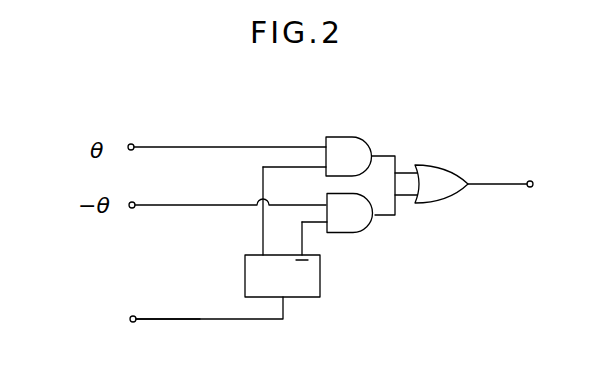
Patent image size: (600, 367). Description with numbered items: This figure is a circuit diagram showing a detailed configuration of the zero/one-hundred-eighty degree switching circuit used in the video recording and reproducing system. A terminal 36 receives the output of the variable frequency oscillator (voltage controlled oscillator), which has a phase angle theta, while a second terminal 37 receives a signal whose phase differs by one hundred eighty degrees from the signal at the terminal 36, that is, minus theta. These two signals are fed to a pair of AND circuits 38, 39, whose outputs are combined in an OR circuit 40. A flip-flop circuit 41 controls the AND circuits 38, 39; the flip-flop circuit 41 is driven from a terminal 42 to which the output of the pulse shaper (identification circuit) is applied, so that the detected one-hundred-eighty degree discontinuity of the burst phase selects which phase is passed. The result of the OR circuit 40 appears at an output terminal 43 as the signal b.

The terminal 36 is at (132, 143).
The terminal 37 is at (133, 201).
The AND circuit 38 is at (352, 137).
The AND circuit 39 is at (370, 223).
The OR circuit 40 is at (468, 158).
The flip-flop circuit 41 is at (322, 278).
The terminal 42 is at (135, 316).
The output terminal 43 is at (532, 188).